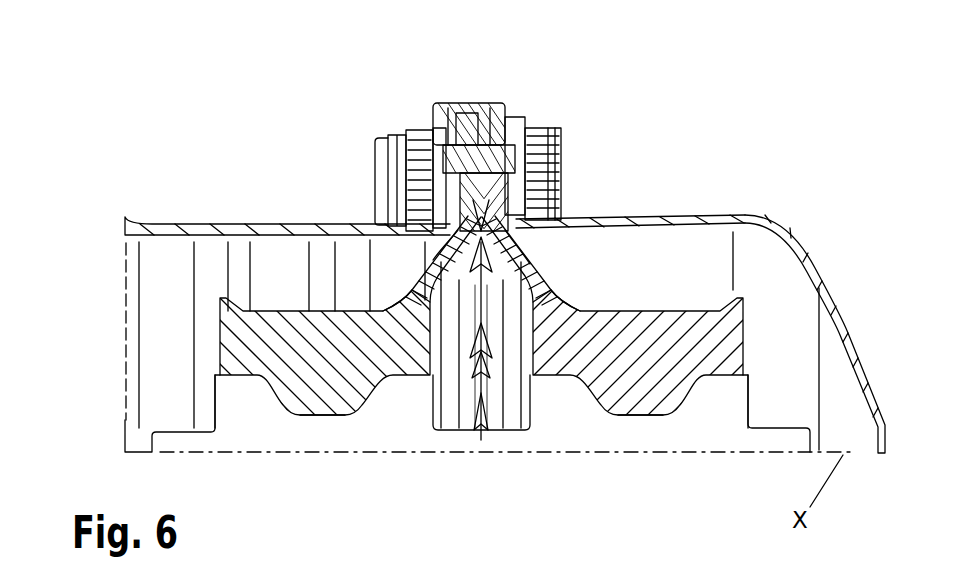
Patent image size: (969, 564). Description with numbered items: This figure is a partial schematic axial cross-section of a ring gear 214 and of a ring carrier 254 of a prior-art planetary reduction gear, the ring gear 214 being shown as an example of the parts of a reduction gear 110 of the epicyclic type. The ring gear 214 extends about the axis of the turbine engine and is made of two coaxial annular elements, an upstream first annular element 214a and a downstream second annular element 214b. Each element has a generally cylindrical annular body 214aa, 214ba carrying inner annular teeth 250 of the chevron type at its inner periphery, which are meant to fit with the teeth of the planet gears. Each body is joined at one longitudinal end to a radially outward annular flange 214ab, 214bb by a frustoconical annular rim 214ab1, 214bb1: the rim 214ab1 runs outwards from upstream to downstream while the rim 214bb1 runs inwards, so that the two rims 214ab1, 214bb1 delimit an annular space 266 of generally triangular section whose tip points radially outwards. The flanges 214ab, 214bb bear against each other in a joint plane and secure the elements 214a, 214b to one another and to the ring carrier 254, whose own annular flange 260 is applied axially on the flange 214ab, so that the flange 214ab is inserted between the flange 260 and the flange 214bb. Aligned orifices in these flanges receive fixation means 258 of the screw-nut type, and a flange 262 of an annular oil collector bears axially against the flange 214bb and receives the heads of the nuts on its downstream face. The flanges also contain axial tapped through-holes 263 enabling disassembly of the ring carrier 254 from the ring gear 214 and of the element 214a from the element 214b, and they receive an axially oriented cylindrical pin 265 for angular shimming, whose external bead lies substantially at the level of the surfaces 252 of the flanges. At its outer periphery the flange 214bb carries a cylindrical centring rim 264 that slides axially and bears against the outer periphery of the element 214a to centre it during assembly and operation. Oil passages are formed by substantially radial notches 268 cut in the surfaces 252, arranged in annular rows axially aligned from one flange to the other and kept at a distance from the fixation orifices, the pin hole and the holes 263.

The reduction gear 110 is at (823, 222).
The ring carrier 254 is at (153, 223).
The ring gear 214 is at (747, 302).
The first annular element 214a is at (212, 322).
The annular body 214aa is at (225, 350).
The annular flange 214ab is at (450, 104).
The annular rim 214ab1 is at (433, 260).
The second annular element 214b is at (747, 326).
The annular body 214ba is at (730, 338).
The annular flange 214bb is at (508, 128).
The annular rim 214bb1 is at (530, 264).
The inner annular teeth 250 is at (320, 407).
The surfaces of the flanges 252 is at (488, 136).
The fixation means 258 is at (550, 172).
The annular flange 260 is at (452, 196).
The flange of an annular oil collector 262 is at (526, 134).
The axial tapped through-holes 263 is at (464, 137).
The cylindrical centring rim 264 is at (471, 104).
The pin 265 is at (446, 160).
The annular space 266 is at (515, 333).
The notches 268 is at (492, 415).